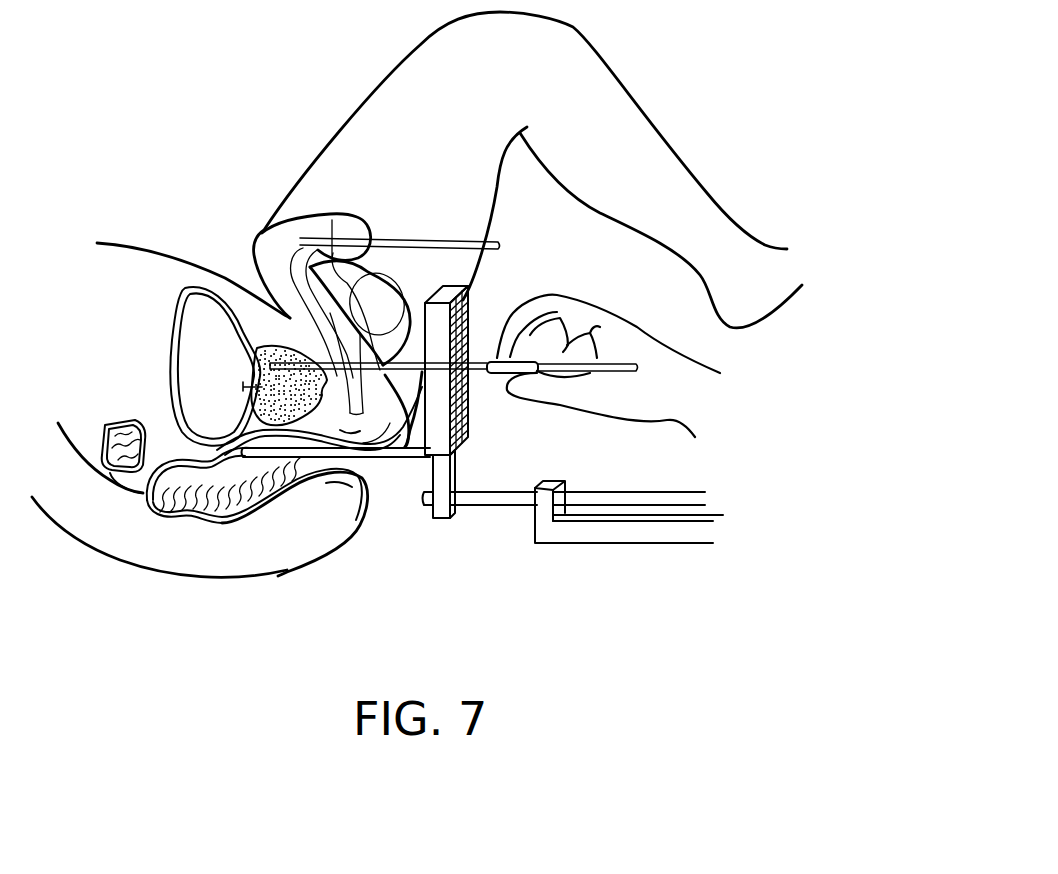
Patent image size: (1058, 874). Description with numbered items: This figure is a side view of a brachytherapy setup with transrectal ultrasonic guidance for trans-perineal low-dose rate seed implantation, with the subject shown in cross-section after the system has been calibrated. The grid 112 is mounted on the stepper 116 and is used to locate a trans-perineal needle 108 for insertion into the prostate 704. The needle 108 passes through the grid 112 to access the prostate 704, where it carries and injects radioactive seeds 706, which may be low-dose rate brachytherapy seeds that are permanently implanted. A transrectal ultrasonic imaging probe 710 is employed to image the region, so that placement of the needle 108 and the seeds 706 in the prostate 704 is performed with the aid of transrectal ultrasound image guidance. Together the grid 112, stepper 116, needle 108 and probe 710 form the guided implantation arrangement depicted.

The trans-perineal needle 108 is at (262, 380).
The prostate 704 is at (250, 403).
The radioactive seeds 706 is at (270, 347).
The transrectal ultrasonic imaging probe 710 is at (377, 460).
The grid 112 is at (472, 418).
The stepper 116 is at (600, 543).